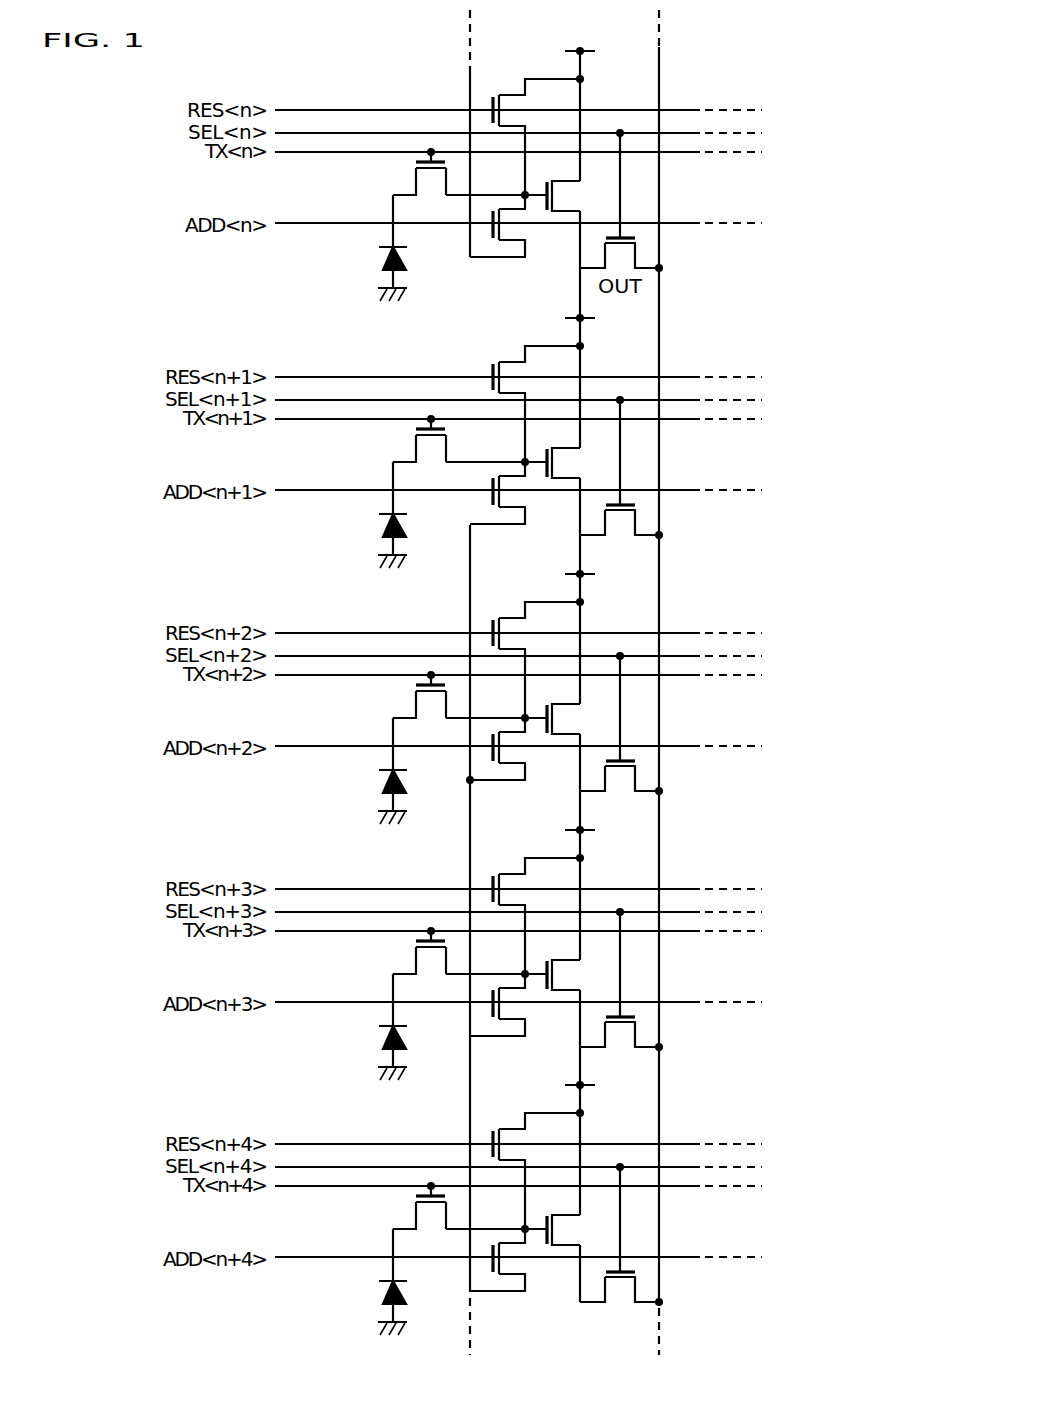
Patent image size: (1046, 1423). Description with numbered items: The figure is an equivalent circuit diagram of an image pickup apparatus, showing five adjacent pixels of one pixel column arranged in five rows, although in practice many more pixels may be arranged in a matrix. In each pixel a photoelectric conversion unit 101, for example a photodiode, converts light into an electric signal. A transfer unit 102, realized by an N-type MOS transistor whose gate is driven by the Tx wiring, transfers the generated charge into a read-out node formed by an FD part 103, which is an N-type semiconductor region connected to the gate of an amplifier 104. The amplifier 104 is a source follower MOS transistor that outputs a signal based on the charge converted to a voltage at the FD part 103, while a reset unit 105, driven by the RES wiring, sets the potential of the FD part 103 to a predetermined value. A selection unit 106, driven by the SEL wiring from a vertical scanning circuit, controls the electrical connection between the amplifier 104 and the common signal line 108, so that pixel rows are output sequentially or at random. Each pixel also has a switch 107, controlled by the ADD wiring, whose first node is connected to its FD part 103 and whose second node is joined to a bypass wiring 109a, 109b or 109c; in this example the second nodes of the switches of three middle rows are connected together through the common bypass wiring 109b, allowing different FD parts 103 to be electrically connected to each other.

The photoelectric conversion unit 101 is at (382, 262).
The transfer unit 102 is at (415, 181).
The FD part 103 is at (525, 193).
The amplifier 104 is at (575, 194).
The reset unit 105 is at (513, 84).
The selection unit 106 is at (642, 256).
The switch 107 is at (523, 228).
The signal line 108 is at (659, 1310).
The bypass wiring 109a is at (470, 75).
The bypass wiring 109b is at (470, 565).
The bypass wiring 109c is at (470, 1307).